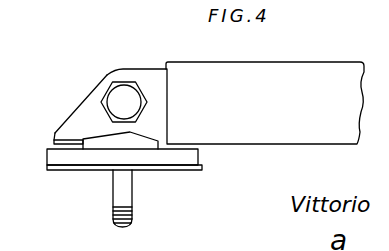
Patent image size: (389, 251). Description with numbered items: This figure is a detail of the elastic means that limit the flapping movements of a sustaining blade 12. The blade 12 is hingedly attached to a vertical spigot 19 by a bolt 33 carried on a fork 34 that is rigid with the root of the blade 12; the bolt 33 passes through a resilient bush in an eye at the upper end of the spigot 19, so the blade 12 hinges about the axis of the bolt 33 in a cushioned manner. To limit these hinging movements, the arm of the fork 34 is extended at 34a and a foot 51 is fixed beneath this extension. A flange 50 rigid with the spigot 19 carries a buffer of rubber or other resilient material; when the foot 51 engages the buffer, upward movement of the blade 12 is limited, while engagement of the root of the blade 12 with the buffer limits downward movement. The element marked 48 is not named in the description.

The blade 12 is at (327, 62).
The vertical spigot 19 is at (120, 196).
The bolt 33 is at (118, 102).
The fork 34 is at (151, 78).
The extension of arm 34a is at (83, 115).
The clamp block 48 is at (78, 157).
The flange 50 is at (50, 168).
The foot 51 is at (55, 142).